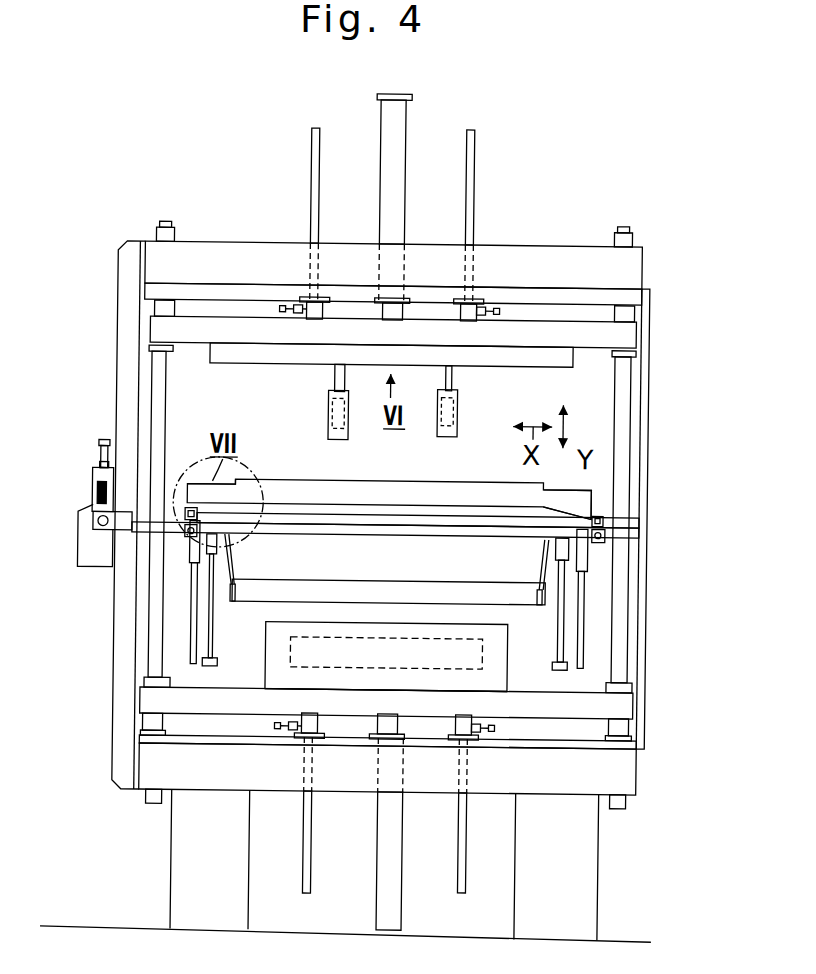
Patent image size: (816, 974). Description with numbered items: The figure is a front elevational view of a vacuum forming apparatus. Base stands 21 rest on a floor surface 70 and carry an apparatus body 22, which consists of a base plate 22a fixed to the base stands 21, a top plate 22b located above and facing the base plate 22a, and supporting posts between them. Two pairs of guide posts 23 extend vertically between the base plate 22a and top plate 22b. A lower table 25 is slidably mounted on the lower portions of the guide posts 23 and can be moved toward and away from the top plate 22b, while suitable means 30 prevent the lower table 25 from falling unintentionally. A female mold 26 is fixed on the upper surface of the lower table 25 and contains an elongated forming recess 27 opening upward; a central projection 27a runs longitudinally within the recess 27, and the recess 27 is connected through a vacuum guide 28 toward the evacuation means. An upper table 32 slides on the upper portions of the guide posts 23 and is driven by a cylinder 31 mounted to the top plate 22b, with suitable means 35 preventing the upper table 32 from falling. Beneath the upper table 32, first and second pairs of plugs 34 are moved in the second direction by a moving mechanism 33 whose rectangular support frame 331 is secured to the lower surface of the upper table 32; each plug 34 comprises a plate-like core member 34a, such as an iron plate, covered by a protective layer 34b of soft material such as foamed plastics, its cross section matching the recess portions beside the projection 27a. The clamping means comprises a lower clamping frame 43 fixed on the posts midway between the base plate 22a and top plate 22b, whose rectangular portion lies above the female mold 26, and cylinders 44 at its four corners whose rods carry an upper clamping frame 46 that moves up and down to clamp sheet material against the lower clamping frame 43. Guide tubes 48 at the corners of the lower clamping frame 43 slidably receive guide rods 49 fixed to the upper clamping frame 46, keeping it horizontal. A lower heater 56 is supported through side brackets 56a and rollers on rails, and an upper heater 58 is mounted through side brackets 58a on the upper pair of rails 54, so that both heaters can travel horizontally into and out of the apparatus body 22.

The base stands 21 is at (179, 862).
The apparatus body 22 is at (645, 261).
The base plate 22a is at (638, 761).
The top plate 22b is at (554, 238).
The guide posts 23 is at (148, 380).
The lower table 25 is at (524, 700).
The female mold 26 is at (507, 680).
The forming recess 27 is at (302, 645).
The central projection 27a is at (419, 628).
The vacuum guide 28 is at (385, 856).
The falling prevention means for lower table 30 is at (322, 721).
The cylinder 31 is at (401, 185).
The upper table 32 is at (576, 340).
The moving mechanism 33 is at (547, 363).
The support frame 331 is at (489, 358).
The plugs 34 is at (347, 425).
The core member 34a is at (327, 398).
The protective layer 34b is at (327, 413).
The falling prevention means for upper table 35 is at (320, 310).
The lower clamping frame 43 is at (397, 525).
The cylinders 44 is at (218, 606).
The upper clamping frame 46 is at (330, 516).
The guide tubes 48 is at (190, 560).
The guide rods 49 is at (190, 605).
The lower pair of rails 54 is at (184, 506).
The lower heater 56 is at (477, 586).
The side brackets 56a is at (541, 563).
The upper heater 58 is at (291, 488).
The side brackets 58a is at (205, 489).
The floor surface 70 is at (650, 928).